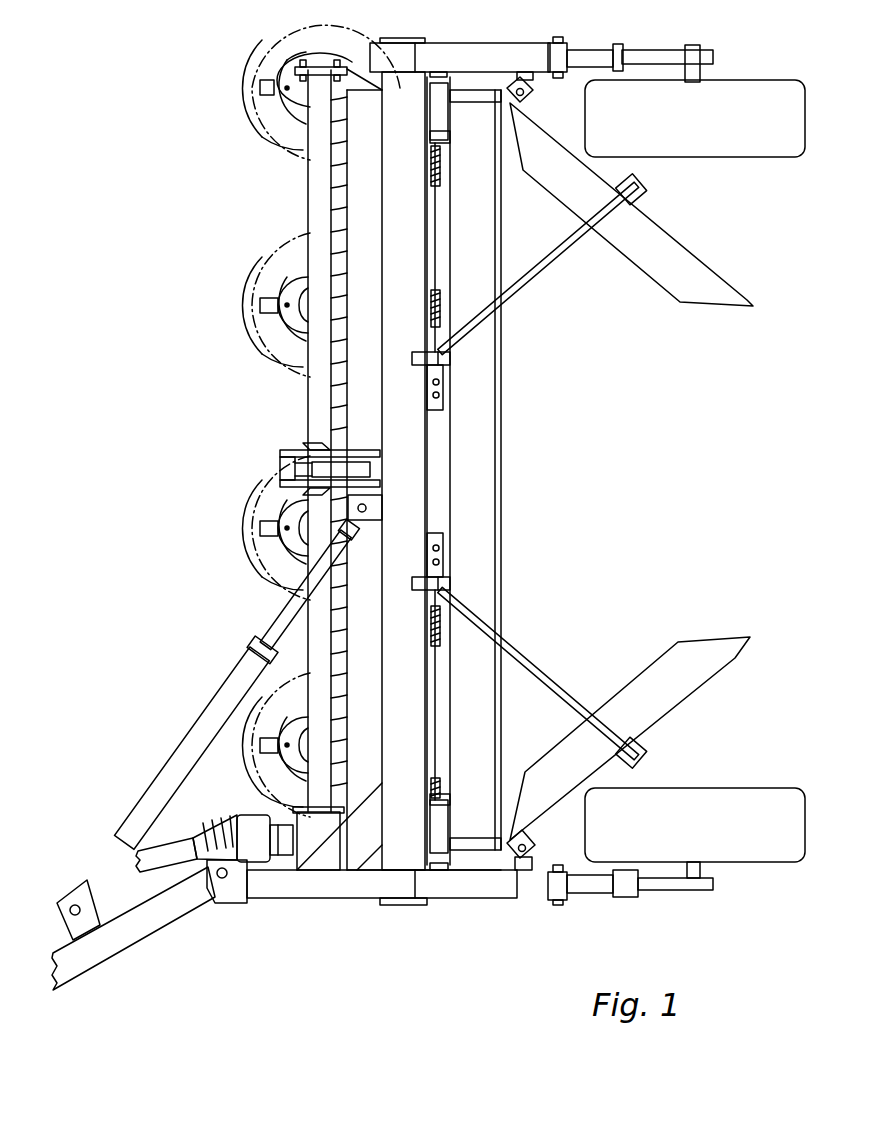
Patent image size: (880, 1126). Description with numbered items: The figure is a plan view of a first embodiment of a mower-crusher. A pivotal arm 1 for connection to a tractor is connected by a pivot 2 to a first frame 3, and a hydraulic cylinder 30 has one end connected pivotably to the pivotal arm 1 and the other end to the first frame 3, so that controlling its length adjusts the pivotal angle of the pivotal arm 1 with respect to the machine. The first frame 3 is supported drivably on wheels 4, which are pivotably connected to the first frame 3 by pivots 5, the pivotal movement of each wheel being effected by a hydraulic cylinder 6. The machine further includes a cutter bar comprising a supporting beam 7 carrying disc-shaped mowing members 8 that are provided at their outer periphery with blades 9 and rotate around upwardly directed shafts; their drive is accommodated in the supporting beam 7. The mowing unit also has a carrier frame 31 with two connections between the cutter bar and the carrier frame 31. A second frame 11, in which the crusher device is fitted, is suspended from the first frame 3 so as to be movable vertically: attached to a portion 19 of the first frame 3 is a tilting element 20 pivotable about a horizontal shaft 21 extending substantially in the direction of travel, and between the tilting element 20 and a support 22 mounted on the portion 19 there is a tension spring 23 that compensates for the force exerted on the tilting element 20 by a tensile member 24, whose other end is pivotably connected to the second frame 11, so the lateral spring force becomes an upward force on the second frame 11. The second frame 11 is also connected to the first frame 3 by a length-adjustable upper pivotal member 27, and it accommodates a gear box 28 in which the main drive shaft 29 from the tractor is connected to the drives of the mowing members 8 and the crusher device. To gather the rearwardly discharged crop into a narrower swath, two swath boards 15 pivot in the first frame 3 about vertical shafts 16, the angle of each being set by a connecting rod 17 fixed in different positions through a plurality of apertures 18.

The pivotal arm 1 is at (173, 913).
The pivot 2 is at (362, 901).
The first frame 3 is at (478, 22).
The wheels 4 is at (748, 798).
The pivots 5 is at (547, 472).
The hydraulic cylinder 6 is at (593, 50).
The supporting beam 7 is at (288, 198).
The mowing members 8 is at (280, 111).
The blades 9 is at (230, 752).
The second frame 11 is at (480, 601).
The swath boards 15 is at (645, 265).
The vertical shafts 16 is at (534, 92).
The connecting rod 17 is at (550, 262).
The apertures 18 is at (440, 395).
The portion of first frame 19 is at (413, 449).
The tilting element 20 is at (407, 828).
The horizontal shaft 21 is at (447, 143).
The support 22 is at (418, 352).
The tension spring 23 is at (438, 257).
The tensile member 24 is at (450, 120).
The upper pivotal member 27 is at (354, 467).
The gear box 28 is at (313, 827).
The main drive shaft 29 is at (183, 832).
The hydraulic cylinder 30 is at (250, 660).
The carrier frame 31 is at (322, 313).